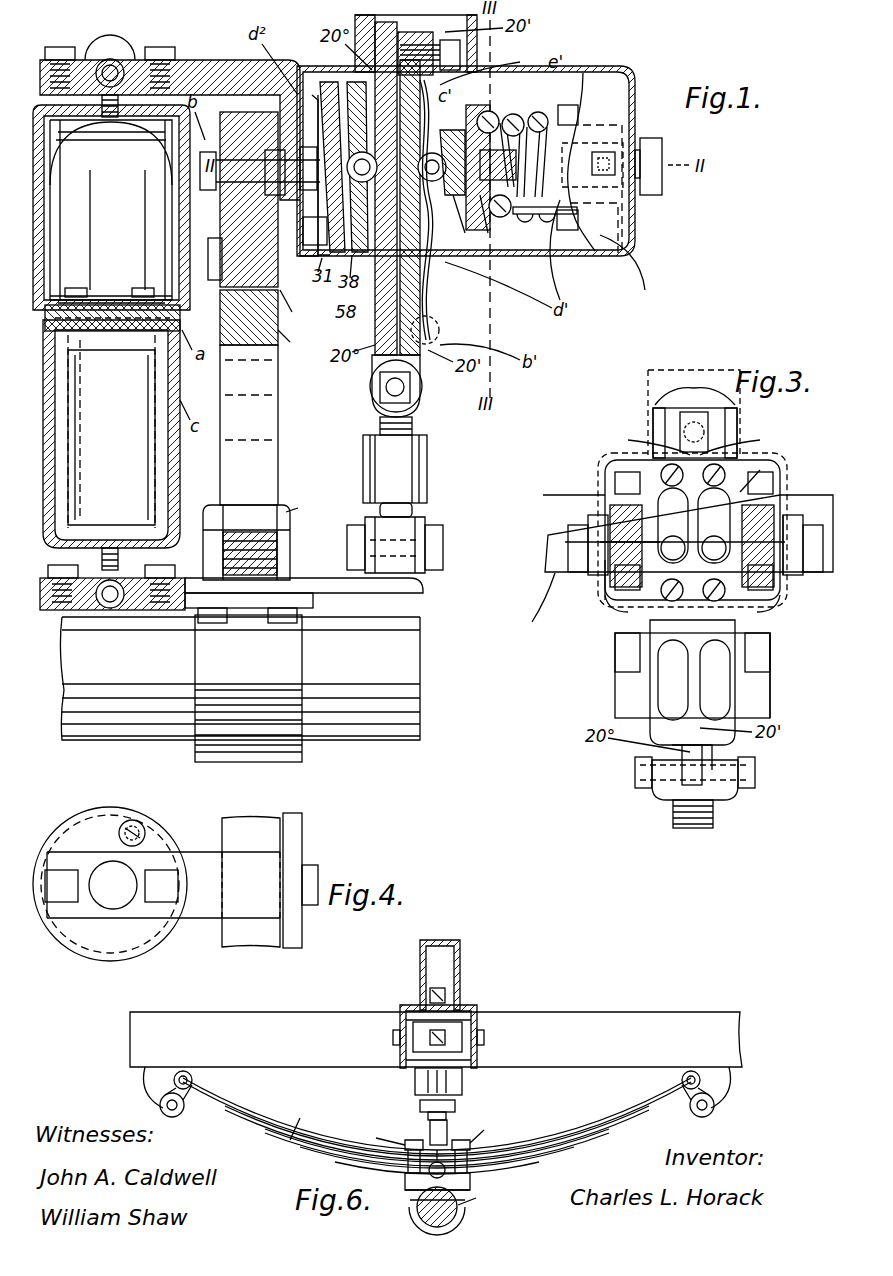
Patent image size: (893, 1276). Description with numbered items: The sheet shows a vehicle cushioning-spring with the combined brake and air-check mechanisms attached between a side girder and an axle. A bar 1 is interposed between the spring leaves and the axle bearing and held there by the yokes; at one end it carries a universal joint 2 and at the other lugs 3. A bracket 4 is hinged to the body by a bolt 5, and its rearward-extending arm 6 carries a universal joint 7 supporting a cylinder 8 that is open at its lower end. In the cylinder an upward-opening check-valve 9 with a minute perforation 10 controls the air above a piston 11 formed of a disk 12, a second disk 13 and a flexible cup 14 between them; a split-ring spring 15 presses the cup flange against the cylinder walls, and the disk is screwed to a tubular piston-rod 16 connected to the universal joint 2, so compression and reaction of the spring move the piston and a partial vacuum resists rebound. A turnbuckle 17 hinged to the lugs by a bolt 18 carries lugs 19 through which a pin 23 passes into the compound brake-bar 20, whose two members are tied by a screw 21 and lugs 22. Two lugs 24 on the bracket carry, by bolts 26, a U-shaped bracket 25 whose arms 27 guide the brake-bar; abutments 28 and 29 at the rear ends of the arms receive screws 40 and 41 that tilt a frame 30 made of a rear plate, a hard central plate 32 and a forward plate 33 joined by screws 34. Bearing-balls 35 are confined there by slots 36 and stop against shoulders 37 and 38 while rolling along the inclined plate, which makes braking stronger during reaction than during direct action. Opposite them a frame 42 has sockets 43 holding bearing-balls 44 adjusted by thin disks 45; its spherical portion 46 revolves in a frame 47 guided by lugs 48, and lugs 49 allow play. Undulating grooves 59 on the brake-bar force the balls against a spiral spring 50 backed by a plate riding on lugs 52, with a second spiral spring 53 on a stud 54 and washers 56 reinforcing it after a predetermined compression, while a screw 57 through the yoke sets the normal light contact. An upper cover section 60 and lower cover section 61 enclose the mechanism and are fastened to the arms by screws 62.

In FIG. 1, the bar 1 is at (302, 580).
In FIG. 6, the bar 1 is at (468, 1180).
In FIG. 1, the universal joint 2 is at (110, 604).
In FIG. 1, the lugs 3 is at (418, 520).
In FIG. 1, the bracket 4 is at (306, 260).
In FIG. 4, the bracket 4 is at (294, 848).
In FIG. 1, the bolt 5 is at (260, 171).
In FIG. 1, the rearward-extending arm 6 is at (285, 88).
In FIG. 4, the rearward-extending arm 6 is at (162, 885).
In FIG. 1, the universal joint 7 is at (112, 66).
In FIG. 4, the universal joint 7 is at (113, 885).
In FIG. 1, the cylinder 8 is at (111, 207).
In FIG. 1, the check-valve 9 is at (172, 62).
In FIG. 4, the check-valve 9 is at (145, 833).
In FIG. 4, the minute perforation 10 is at (134, 820).
In FIG. 1, the piston 11 is at (125, 300).
In FIG. 1, the disk 12 is at (122, 330).
In FIG. 1, the disk 13 is at (140, 288).
In FIG. 1, the flexible cup 14 is at (132, 345).
In FIG. 1, the spring 15 is at (74, 288).
In FIG. 1, the tubular piston-rod 16 is at (58, 462).
In FIG. 1, the turnbuckle 17 is at (395, 476).
In FIG. 6, the turnbuckle 17 is at (447, 1130).
In FIG. 1, the bolt 18 is at (444, 548).
In FIG. 6, the bolt 18 is at (430, 1185).
In FIG. 1, the lugs 19 is at (410, 380).
In FIG. 3, the lugs 19 is at (755, 772).
In FIG. 6, the lugs 19 is at (428, 1116).
In FIG. 1, the compound brake-bar 20 is at (400, 24).
In FIG. 3, the compound brake-bar 20 is at (695, 385).
In FIG. 6, the compound brake-bar 20 is at (462, 1086).
In FIG. 1, the screw 21 is at (440, 52).
In FIG. 3, the screw 21 is at (690, 430).
In FIG. 6, the screw 21 is at (445, 995).
In FIG. 1, the lugs 22 is at (470, 40).
In FIG. 3, the lugs 22 is at (660, 438).
In FIG. 1, the pin 23 is at (392, 380).
In FIG. 3, the pin 23 is at (652, 770).
In FIG. 6, the pin 23 is at (420, 1105).
In FIG. 3, the lugs 24 is at (605, 558).
In FIG. 1, the U-shaped bracket 25 is at (635, 240).
In FIG. 3, the bolts 26 is at (570, 540).
In FIG. 6, the bolts 26 is at (406, 1040).
In FIG. 3, the arms 27 is at (620, 540).
In FIG. 1, the abutments 28 is at (325, 100).
In FIG. 1, the abutments 29 is at (267, 248).
In FIG. 3, the frame 30 is at (740, 635).
In FIG. 1, the central plate 32 is at (316, 95).
In FIG. 1, the forward plate 33 is at (428, 280).
In FIG. 3, the screws 34 is at (665, 470).
In FIG. 1, the bearing-balls 35 is at (362, 167).
In FIG. 3, the bearing-balls 35 is at (581, 542).
In FIG. 3, the slots 36 is at (785, 582).
In FIG. 1, the shoulder 37 is at (358, 80).
In FIG. 3, the shoulder 37 is at (725, 470).
In FIG. 3, the shoulder 38 is at (612, 596).
In FIG. 3, the screws 40 is at (763, 475).
In FIG. 3, the screws 41 is at (795, 640).
In FIG. 1, the frame 42 is at (515, 62).
In FIG. 1, the sockets 43 is at (483, 235).
In FIG. 1, the bearing-balls 44 is at (432, 167).
In FIG. 1, the removable disks 45 is at (458, 210).
In FIG. 1, the spherical portion 46 is at (500, 125).
In FIG. 1, the frame 47 is at (500, 215).
In FIG. 1, the lugs 48 is at (495, 115).
In FIG. 1, the lugs 49 is at (480, 118).
In FIG. 1, the spiral spring 50 is at (540, 220).
In FIG. 1, the lugs 52 is at (570, 120).
In FIG. 1, the second spiral spring 53 is at (588, 245).
In FIG. 1, the stud 54 is at (582, 70).
In FIG. 1, the washers 56 is at (553, 125).
In FIG. 1, the screw 57 is at (658, 180).
In FIG. 6, the screw 57 is at (450, 1028).
In FIG. 1, the grooves 59 is at (432, 318).
In FIG. 3, the grooves 59 is at (672, 708).
In FIG. 1, the upper cover section 60 is at (610, 150).
In FIG. 3, the upper cover section 60 is at (610, 475).
In FIG. 6, the upper cover section 60 is at (460, 945).
In FIG. 1, the lower cover section 61 is at (622, 280).
In FIG. 3, the lower cover section 61 is at (607, 620).
In FIG. 6, the lower cover section 61 is at (480, 1052).
In FIG. 1, the screws 62 is at (615, 150).